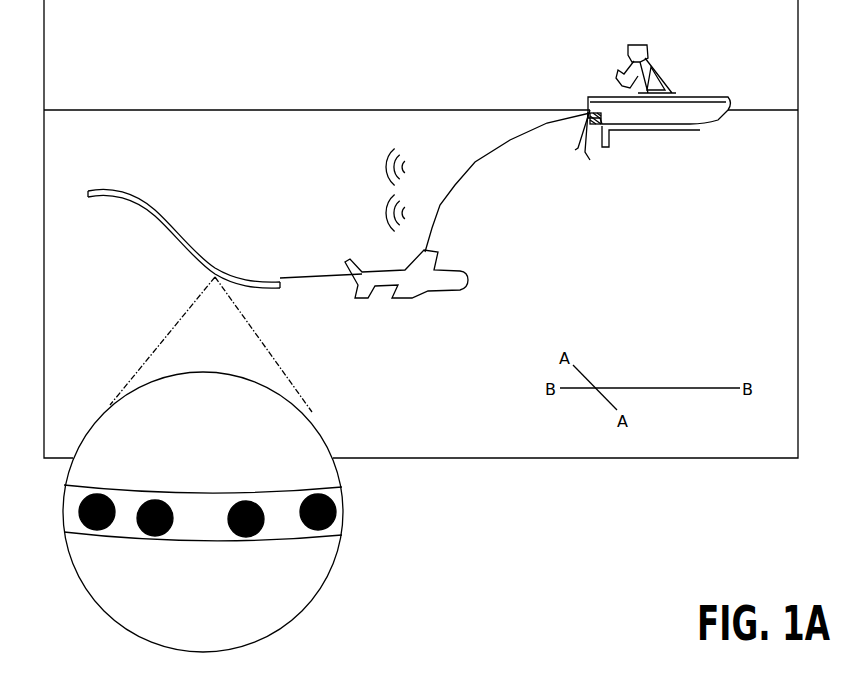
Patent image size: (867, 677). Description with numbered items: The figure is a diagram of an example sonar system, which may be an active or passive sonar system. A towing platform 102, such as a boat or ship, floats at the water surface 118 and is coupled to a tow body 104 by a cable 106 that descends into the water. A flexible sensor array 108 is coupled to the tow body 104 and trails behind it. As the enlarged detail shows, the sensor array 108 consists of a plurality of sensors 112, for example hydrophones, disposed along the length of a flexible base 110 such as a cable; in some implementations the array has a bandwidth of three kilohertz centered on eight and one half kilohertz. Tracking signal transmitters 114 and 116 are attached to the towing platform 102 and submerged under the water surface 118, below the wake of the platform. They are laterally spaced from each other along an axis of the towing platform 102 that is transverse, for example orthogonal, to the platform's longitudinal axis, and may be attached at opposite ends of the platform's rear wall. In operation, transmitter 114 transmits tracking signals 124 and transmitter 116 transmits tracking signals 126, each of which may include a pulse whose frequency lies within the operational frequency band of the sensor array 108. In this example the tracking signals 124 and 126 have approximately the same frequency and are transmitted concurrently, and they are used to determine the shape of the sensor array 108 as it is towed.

The towing platform 102 is at (709, 94).
The tow body 104 is at (470, 285).
The cable 106 is at (440, 208).
The flexible sensor array 108 is at (160, 222).
The flexible base 110 is at (184, 506).
The sensors 112 is at (95, 529).
The tracking signal transmitter 114 is at (588, 158).
The tracking signal transmitter 116 is at (578, 140).
The water surface 118 is at (433, 108).
The tracking signals 124 is at (385, 224).
The tracking signals 126 is at (385, 160).